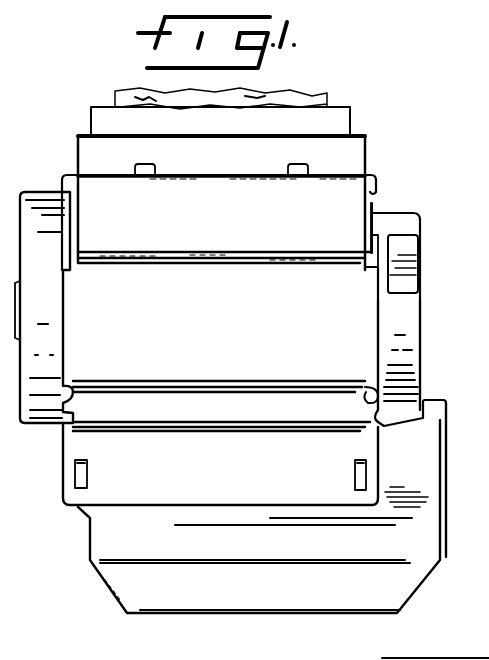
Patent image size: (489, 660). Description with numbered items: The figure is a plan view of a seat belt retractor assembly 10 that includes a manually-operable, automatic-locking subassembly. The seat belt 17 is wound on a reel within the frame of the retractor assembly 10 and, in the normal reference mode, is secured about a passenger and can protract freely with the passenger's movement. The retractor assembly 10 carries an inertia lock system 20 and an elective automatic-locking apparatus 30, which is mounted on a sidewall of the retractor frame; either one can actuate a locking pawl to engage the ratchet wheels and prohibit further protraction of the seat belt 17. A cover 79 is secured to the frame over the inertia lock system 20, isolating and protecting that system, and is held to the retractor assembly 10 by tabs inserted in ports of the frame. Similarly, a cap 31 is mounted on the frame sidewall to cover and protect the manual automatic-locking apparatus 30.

The seat belt retractor assembly 10 is at (237, 305).
The seat belt 17 is at (310, 92).
The inertia lock system 20 is at (236, 616).
The automatic-locking apparatus 30 is at (424, 215).
The cap 31 is at (412, 317).
The cover 79 is at (435, 553).